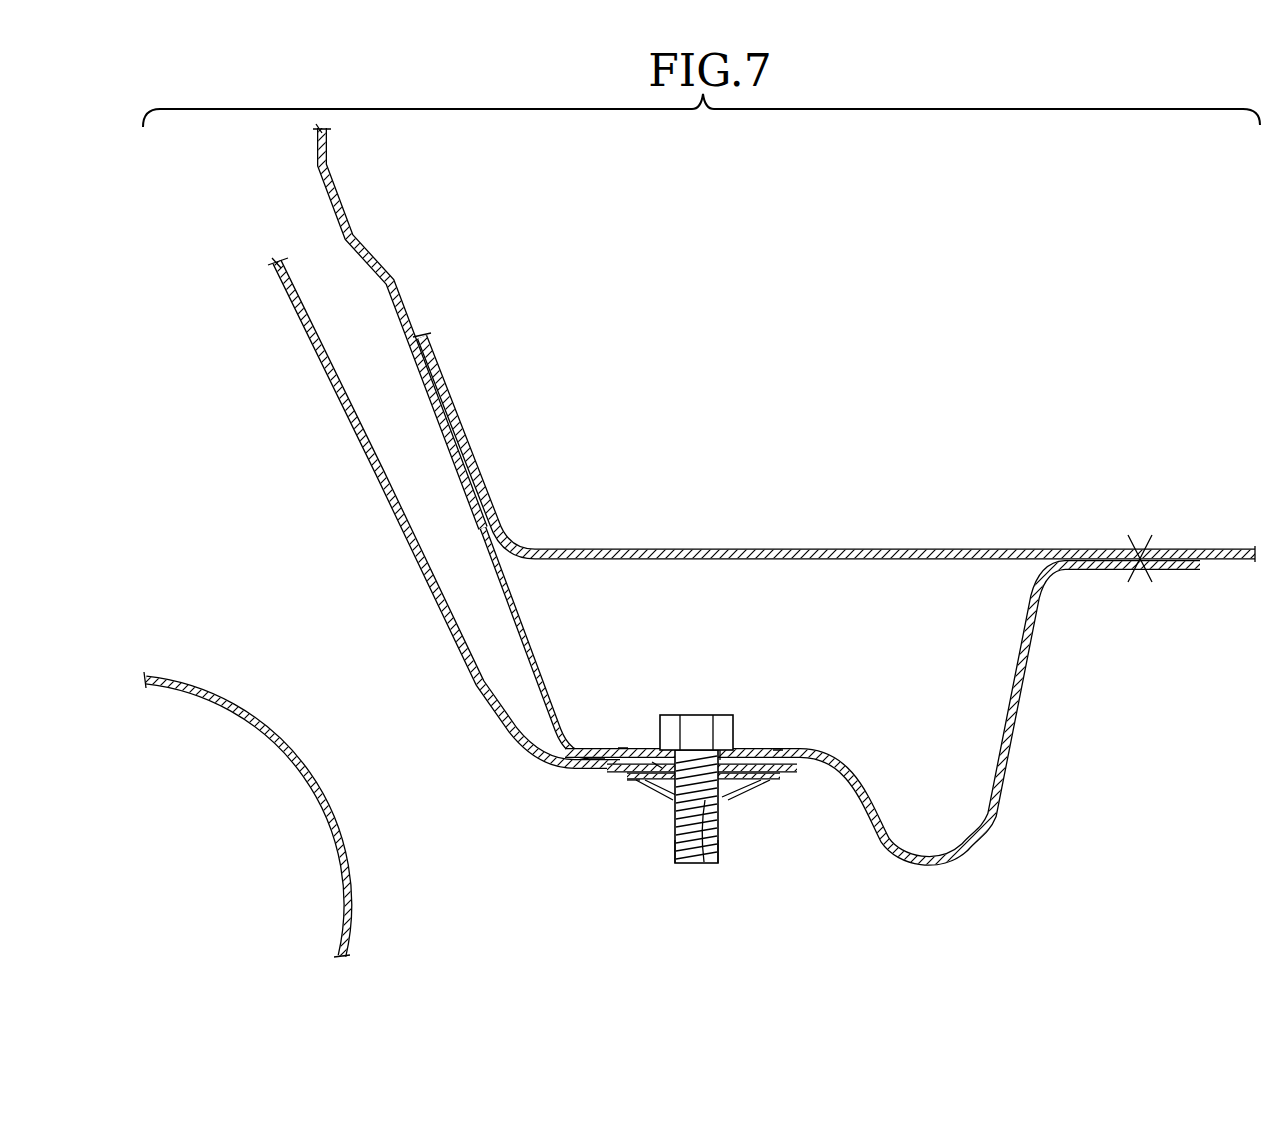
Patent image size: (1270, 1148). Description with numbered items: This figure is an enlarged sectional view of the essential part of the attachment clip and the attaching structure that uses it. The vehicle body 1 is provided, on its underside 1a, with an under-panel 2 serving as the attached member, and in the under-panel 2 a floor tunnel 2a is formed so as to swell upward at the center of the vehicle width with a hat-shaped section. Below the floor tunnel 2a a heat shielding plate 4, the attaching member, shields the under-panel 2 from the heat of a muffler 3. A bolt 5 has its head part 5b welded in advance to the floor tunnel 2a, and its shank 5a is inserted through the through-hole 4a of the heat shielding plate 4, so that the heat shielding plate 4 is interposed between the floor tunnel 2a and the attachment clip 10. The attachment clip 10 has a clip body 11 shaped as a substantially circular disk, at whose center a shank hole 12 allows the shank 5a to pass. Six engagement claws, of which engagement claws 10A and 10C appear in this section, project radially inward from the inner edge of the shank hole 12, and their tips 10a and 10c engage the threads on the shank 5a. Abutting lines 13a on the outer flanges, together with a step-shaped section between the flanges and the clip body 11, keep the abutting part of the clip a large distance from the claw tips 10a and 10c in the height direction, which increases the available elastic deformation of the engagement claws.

The vehicle body 1 is at (1095, 388).
The underside of vehicle body 1a is at (1228, 572).
The under-panel 2 is at (458, 408).
The floor tunnel 2a is at (343, 207).
The muffler 3 is at (247, 695).
The heat shielding plate 4 is at (491, 728).
The through-hole 4a is at (720, 748).
The bolt 5 is at (683, 708).
The shank 5a is at (721, 828).
The head part 5b is at (735, 750).
The attachment clip 10 is at (786, 792).
The engagement claw 10A is at (738, 787).
The engagement claw 10C is at (651, 800).
The tip of engagement claw 10a is at (714, 850).
The tip of engagement claw 10c is at (673, 843).
The clip body 11 is at (637, 783).
The shank hole 12 is at (657, 765).
The abutting line 13a is at (623, 748).